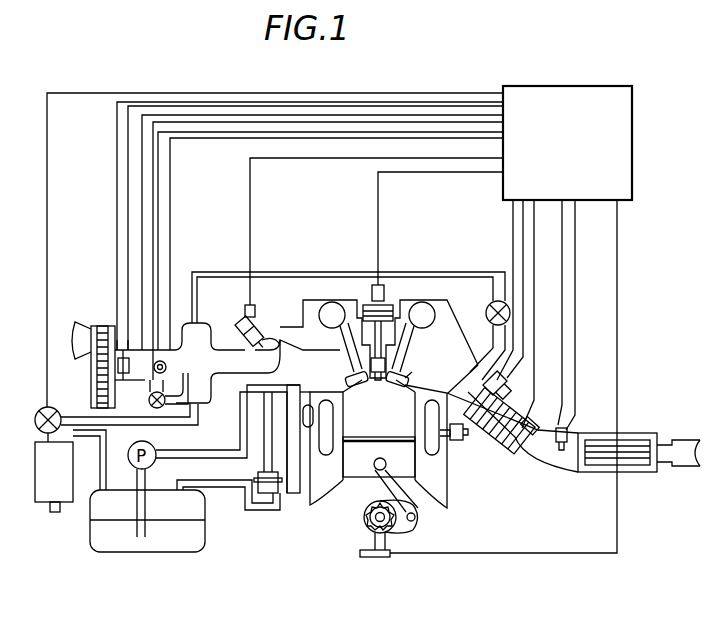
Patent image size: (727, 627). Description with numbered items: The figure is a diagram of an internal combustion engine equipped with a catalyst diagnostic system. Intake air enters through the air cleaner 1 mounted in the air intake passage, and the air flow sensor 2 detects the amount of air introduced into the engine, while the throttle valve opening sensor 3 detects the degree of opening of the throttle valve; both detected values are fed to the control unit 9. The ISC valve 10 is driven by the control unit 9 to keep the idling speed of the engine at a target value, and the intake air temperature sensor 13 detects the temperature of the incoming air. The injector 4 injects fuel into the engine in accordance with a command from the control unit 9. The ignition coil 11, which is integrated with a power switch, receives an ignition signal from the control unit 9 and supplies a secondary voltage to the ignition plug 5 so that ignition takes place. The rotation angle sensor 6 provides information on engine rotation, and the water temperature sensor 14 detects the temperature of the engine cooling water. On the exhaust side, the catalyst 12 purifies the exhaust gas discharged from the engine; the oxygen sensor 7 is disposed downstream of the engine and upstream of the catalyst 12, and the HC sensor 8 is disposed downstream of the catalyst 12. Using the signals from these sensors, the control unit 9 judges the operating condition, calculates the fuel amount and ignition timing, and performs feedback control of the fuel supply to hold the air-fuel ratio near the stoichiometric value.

The air cleaner 1 is at (103, 325).
The air flow sensor 2 is at (121, 380).
The throttle valve opening sensor 3 is at (167, 365).
The injector 4 is at (243, 322).
The ignition plug 5 is at (408, 378).
The rotation angle sensor 6 is at (372, 559).
The oxygen sensor 7 is at (510, 385).
The HC sensor 8 is at (567, 426).
The control unit 9 is at (632, 186).
The ISC valve 10 is at (160, 409).
The ignition coil 11 is at (388, 295).
The catalyst 12 is at (505, 462).
The intake air temperature sensor 13 is at (130, 340).
The water temperature sensor 14 is at (452, 440).